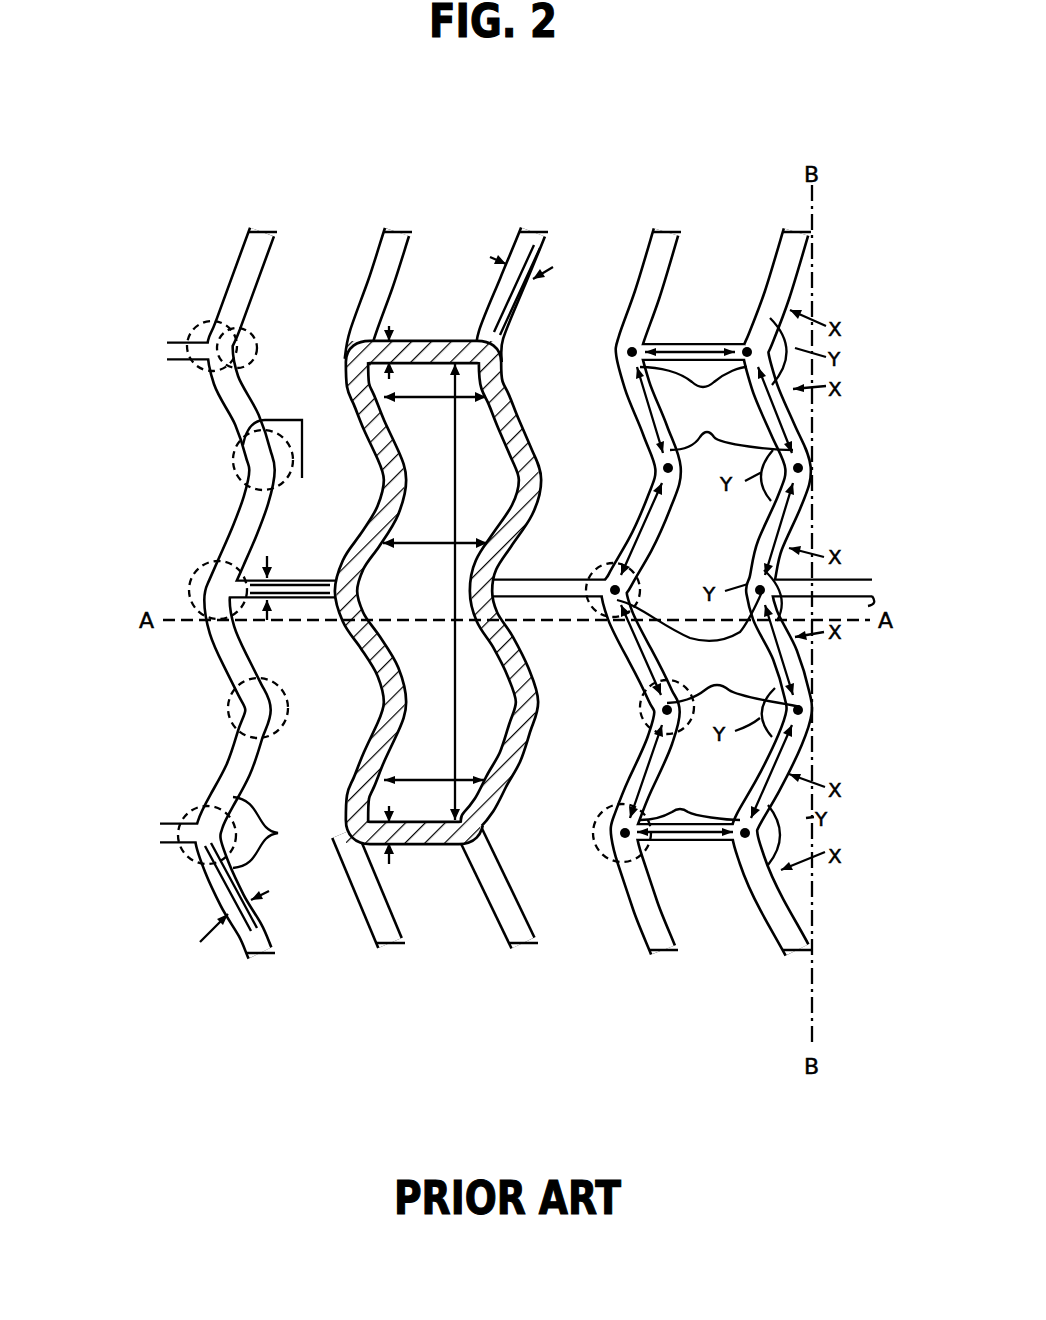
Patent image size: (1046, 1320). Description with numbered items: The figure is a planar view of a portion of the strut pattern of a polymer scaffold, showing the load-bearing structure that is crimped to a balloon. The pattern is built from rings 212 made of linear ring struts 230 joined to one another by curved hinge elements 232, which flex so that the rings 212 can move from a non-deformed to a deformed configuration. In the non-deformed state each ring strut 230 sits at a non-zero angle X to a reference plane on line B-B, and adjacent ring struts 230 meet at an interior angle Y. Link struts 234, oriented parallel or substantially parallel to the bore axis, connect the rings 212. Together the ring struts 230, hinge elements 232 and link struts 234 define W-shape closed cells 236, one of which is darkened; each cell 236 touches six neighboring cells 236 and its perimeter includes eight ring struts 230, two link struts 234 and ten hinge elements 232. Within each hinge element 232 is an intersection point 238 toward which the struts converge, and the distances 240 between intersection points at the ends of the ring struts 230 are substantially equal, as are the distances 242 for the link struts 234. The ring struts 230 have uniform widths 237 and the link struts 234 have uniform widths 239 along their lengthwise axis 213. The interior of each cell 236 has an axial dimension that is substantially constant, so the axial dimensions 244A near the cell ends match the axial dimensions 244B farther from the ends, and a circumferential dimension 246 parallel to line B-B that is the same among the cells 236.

The rings 212 is at (300, 970).
The lengthwise axis 213 is at (518, 298).
The ring struts 230 is at (262, 284).
The hinge elements 232 is at (238, 462).
The link struts 234 is at (427, 322).
The W-shape closed cells 236 is at (562, 373).
The ring strut widths 237 is at (562, 259).
The intersection point 238 is at (708, 593).
The link strut widths 239 is at (389, 326).
The distances 240 is at (645, 512).
The distances 242 is at (665, 344).
The axial dimensions 244A is at (396, 401).
The axial dimensions 244B is at (447, 540).
The circumferential dimension 246 is at (458, 447).